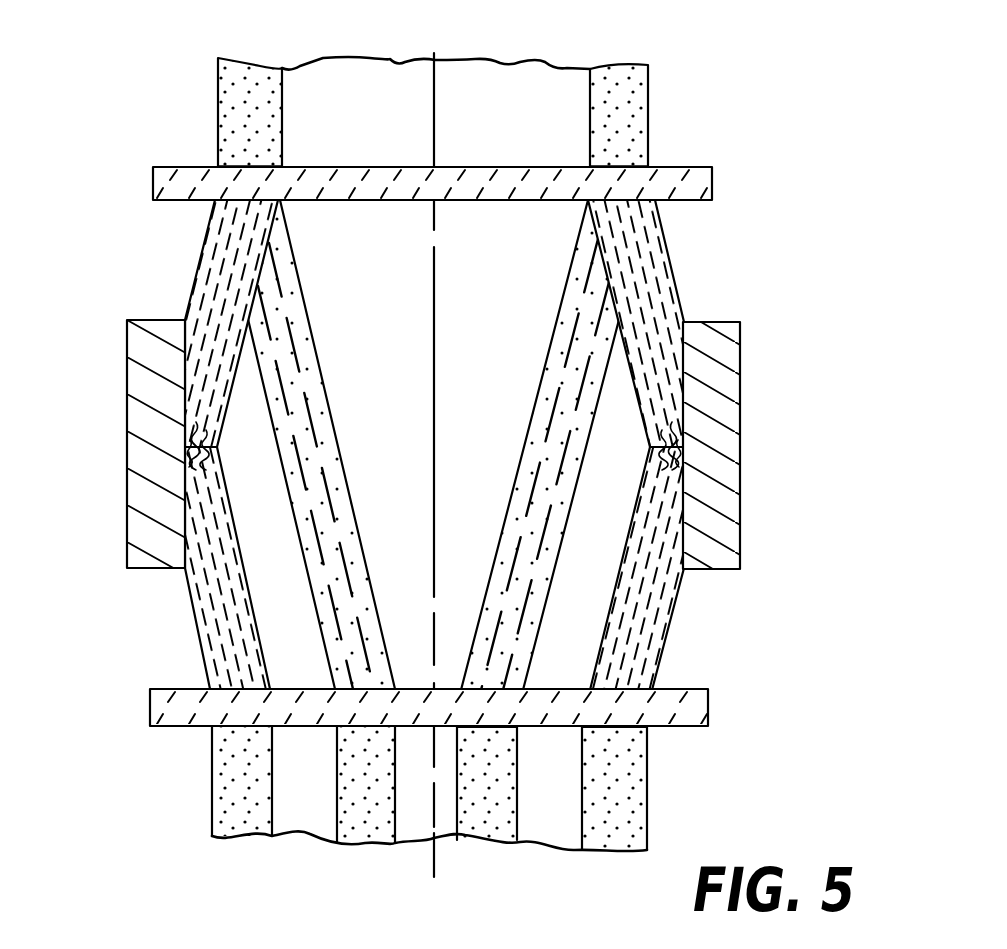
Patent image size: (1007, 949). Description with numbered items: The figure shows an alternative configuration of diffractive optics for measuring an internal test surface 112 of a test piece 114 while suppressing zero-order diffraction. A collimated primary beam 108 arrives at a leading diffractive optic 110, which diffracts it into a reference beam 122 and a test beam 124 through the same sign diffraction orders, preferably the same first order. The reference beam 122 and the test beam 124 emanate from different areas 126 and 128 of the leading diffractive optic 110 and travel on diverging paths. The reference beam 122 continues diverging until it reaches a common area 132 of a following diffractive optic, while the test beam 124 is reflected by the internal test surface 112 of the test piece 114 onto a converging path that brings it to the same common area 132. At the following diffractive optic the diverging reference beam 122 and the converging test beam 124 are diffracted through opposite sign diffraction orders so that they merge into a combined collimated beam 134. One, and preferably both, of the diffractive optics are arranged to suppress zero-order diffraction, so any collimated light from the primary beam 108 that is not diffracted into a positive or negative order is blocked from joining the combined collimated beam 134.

The primary beam 108 is at (243, 830).
The leading diffractive optic 110 is at (150, 704).
The internal test surface 112 is at (193, 447).
The test piece 114 is at (133, 490).
The reference beam 122 is at (302, 327).
The test beam 124 is at (208, 262).
The area of the leading diffractive optic 126 is at (367, 727).
The area of the leading diffractive optic 128 is at (233, 727).
The common area 132 is at (240, 166).
The combined collimated beam 134 is at (247, 70).